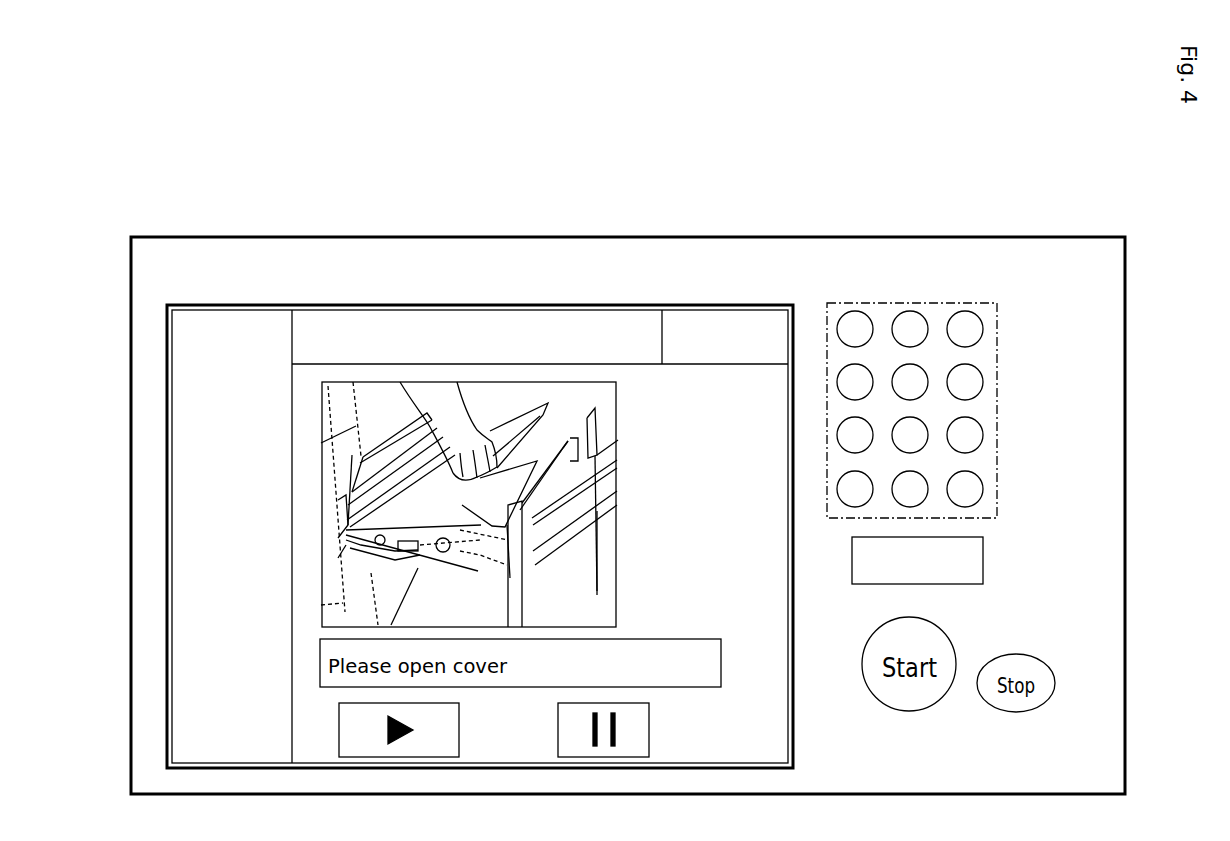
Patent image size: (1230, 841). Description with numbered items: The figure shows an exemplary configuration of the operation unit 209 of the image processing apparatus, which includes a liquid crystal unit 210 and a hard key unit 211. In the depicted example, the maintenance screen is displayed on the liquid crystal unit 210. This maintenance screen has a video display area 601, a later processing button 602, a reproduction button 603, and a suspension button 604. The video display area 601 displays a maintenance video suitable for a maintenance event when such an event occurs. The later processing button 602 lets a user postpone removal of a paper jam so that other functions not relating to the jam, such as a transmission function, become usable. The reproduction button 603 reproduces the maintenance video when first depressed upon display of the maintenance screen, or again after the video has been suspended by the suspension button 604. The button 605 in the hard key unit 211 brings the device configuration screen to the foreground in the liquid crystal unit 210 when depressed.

The operation unit 209 is at (845, 237).
The liquid crystal unit 210 is at (538, 305).
The hard key unit 211 is at (952, 303).
The video display area 601 is at (616, 552).
The later processing button 602 is at (736, 364).
The reproduction button 603 is at (459, 720).
The suspension button 604 is at (649, 718).
The button 605 is at (983, 550).